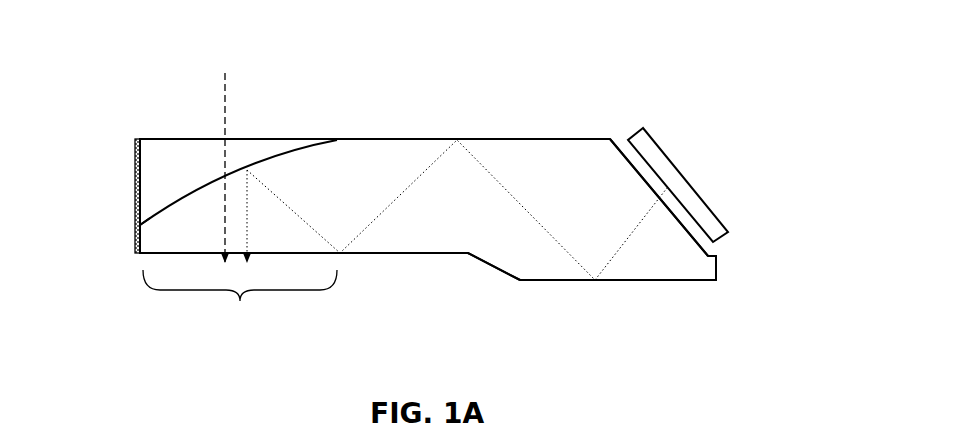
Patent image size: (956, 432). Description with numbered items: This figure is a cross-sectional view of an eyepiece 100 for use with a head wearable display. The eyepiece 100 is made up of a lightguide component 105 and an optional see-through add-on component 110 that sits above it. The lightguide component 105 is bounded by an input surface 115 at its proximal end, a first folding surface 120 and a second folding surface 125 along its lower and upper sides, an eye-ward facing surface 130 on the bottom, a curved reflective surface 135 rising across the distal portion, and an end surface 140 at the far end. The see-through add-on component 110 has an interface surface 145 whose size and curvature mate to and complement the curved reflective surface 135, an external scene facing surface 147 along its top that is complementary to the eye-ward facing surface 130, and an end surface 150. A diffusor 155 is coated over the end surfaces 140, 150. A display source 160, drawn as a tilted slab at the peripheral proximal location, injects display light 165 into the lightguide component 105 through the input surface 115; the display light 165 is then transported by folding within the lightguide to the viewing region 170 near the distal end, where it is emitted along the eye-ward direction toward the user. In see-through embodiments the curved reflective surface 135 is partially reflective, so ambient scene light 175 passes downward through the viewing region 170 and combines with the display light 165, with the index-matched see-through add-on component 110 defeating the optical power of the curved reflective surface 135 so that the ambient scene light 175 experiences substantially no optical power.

The eyepiece 100 is at (102, 71).
The lightguide component 105 is at (590, 199).
The see-through add-on component 110 is at (203, 170).
The input surface 115 is at (614, 139).
The first folding surface 120 is at (630, 281).
The second folding surface 125 is at (520, 139).
The eye-ward facing surface 130 is at (397, 255).
The curved reflective surface 135 is at (306, 152).
The end surface 140 is at (142, 240).
The interface surface 145 is at (270, 152).
The external scene facing surface 147 is at (193, 139).
The end surface 150 is at (137, 160).
The diffusor 155 is at (138, 213).
The display source 160 is at (697, 186).
The display light 165 is at (392, 203).
The viewing region 170 is at (240, 261).
The ambient scene light 175 is at (222, 92).